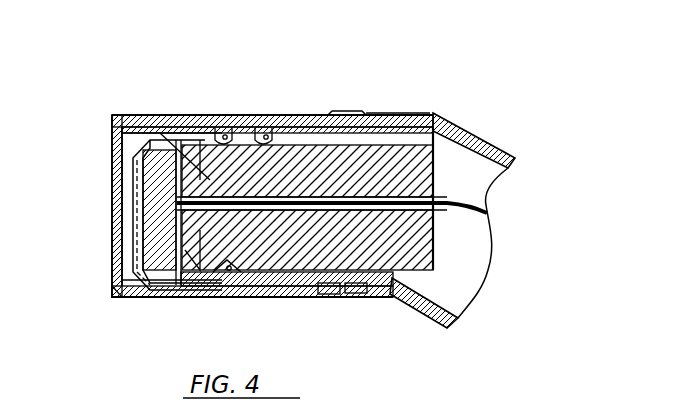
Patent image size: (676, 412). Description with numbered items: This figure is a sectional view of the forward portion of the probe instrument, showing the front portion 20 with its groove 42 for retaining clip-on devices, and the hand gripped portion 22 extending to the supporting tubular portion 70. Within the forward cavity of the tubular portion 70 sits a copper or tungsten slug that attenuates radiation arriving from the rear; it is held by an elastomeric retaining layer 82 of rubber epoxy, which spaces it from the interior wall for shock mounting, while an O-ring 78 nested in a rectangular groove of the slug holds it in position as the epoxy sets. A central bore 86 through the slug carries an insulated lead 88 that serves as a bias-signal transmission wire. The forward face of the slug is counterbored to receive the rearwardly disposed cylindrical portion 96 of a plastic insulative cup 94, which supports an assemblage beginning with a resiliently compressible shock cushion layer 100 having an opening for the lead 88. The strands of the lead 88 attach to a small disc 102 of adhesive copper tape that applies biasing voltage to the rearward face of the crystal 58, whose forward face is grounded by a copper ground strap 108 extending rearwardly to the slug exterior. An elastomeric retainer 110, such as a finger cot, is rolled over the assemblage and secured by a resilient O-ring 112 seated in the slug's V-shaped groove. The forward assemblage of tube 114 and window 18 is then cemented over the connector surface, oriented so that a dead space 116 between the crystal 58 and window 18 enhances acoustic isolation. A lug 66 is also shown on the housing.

The front portion 20 is at (132, 57).
The hand gripped portion 22 is at (533, 70).
The window 18 is at (112, 255).
The groove 42 is at (358, 113).
The crystal 58 is at (113, 285).
The lug 66 is at (278, 298).
The supporting tubular portion 70 is at (427, 111).
The O-ring 78 is at (268, 133).
The elastomeric retaining layer 82 is at (378, 132).
The central bore 86 is at (435, 170).
The insulated lead 88 is at (487, 193).
The cup 94 is at (173, 117).
The rearwardly disposed cylindrical portion 96 is at (208, 117).
The shock cushion layer 100 is at (167, 296).
The disc 102 is at (148, 188).
The ground strap 108 is at (183, 296).
The elastomeric retainer 110 is at (133, 160).
The O-ring 112 is at (229, 132).
The tube 114 is at (231, 298).
The dead space 116 is at (127, 212).